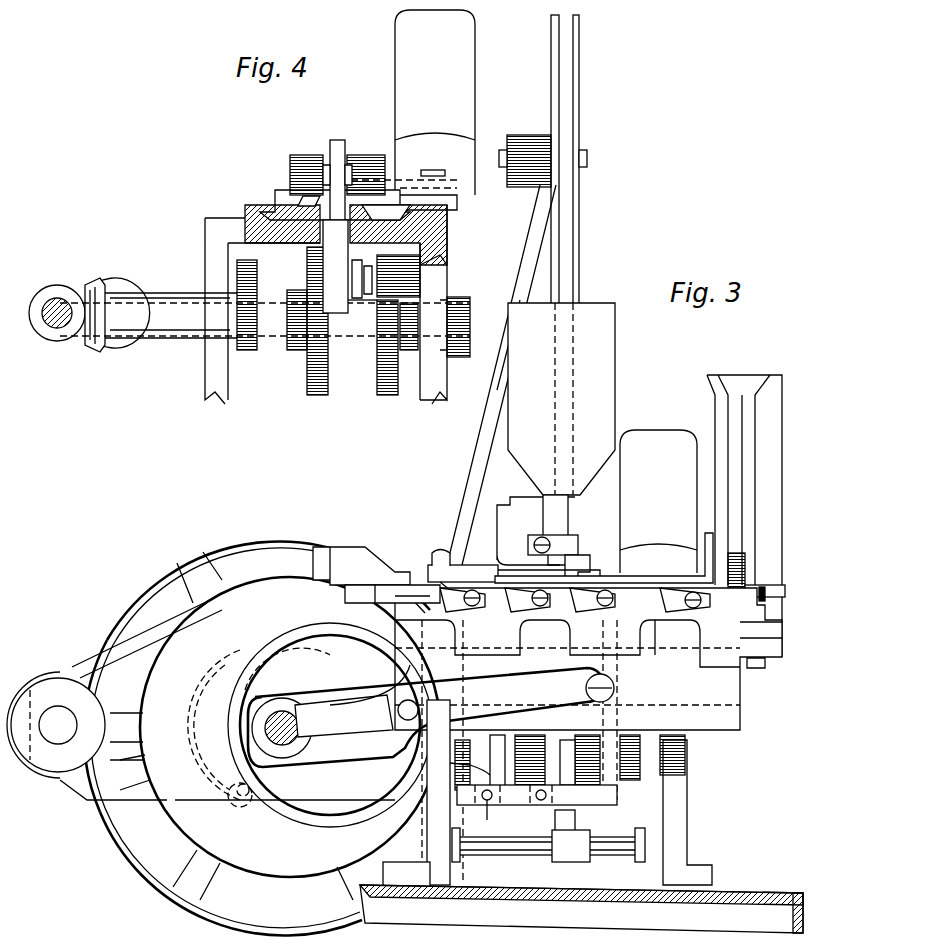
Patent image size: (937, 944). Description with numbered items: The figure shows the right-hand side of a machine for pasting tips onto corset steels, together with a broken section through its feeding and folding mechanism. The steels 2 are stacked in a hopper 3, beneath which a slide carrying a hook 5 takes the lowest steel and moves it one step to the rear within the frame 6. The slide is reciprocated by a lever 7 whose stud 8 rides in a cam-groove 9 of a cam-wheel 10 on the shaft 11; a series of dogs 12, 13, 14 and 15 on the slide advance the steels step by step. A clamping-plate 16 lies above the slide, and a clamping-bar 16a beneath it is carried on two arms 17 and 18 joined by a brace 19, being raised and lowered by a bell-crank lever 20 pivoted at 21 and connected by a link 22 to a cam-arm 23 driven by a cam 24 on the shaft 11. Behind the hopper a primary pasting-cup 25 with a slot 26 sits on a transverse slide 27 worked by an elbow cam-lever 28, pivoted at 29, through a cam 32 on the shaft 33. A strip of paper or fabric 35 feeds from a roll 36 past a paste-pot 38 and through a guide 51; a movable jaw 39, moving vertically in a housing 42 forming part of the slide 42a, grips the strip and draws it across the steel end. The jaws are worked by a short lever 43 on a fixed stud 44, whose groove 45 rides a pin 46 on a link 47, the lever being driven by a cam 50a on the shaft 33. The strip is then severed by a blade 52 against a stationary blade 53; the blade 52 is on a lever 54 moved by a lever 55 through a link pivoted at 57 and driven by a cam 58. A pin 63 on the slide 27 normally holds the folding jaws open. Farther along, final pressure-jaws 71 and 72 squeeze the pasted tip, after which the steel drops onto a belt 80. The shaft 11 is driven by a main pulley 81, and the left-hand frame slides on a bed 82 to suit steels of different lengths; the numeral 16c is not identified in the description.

In FIG. 3, the steel 2 is at (735, 553).
In FIG. 3, the hopper 3 is at (744, 468).
In FIG. 3, the hook 5 is at (766, 590).
In FIG. 4, the frame 6 is at (326, 304).
In FIG. 3, the frame 6 is at (740, 715).
In FIG. 3, the lever 7 is at (431, 716).
In FIG. 3, the stud 8 is at (398, 712).
In FIG. 3, the cam-groove 9 is at (322, 808).
In FIG. 3, the cam-wheel 10 is at (290, 727).
In FIG. 4, the shaft 11 is at (57, 300).
In FIG. 3, the shaft 11 is at (295, 722).
In FIG. 3, the dog 12 is at (685, 600).
In FIG. 3, the dog 13 is at (592, 600).
In FIG. 3, the dog 14 is at (527, 600).
In FIG. 3, the dog 15 is at (462, 600).
In FIG. 3, the clamping-plate 16 is at (650, 580).
In FIG. 3, the clamping-bar 16a is at (660, 640).
In FIG. 3, the plate extension 16c is at (412, 593).
In FIG. 3, the arm 17 is at (600, 768).
In FIG. 3, the arm 18 is at (460, 777).
In FIG. 3, the brace 19 is at (537, 795).
In FIG. 3, the bell-crank lever 20 is at (483, 767).
In FIG. 3, the pivot 21 is at (485, 808).
In FIG. 3, the link 22 is at (415, 667).
In FIG. 3, the cam-arm 23 is at (215, 762).
In FIG. 3, the cam 24 is at (320, 747).
In FIG. 4, the primary pasting-cup 25 is at (435, 102).
In FIG. 3, the primary pasting-cup 25 is at (658, 501).
In FIG. 4, the slot 26 is at (433, 170).
In FIG. 3, the slot 26 is at (639, 601).
In FIG. 4, the slide 27 is at (312, 198).
In FIG. 3, the elbow cam-lever 28 is at (576, 820).
In FIG. 3, the pivot 29 is at (515, 856).
In FIG. 4, the cam 32 is at (316, 395).
In FIG. 3, the cam 32 is at (528, 762).
In FIG. 4, the shaft 33 is at (270, 310).
In FIG. 3, the shaft 33 is at (583, 733).
In FIG. 3, the strip of paper or fabric 35 is at (570, 507).
In FIG. 3, the roll 36 is at (567, 232).
In FIG. 3, the paste-pot 38 is at (561, 399).
In FIG. 4, the movable jaw 39 is at (338, 158).
In FIG. 4, the housing 42 is at (335, 266).
In FIG. 4, the slide 42a is at (283, 200).
In FIG. 3, the slide 42a is at (587, 626).
In FIG. 4, the lever 43 is at (365, 295).
In FIG. 4, the stud 44 is at (415, 283).
In FIG. 4, the groove 45 is at (370, 232).
In FIG. 4, the pin 46 is at (385, 270).
In FIG. 4, the link 47 is at (362, 262).
In FIG. 4, the cam 50a is at (388, 395).
In FIG. 3, the cam 50a is at (690, 780).
In FIG. 3, the guide 51 is at (538, 534).
In FIG. 3, the blade 52 is at (575, 556).
In FIG. 3, the stationary blade 53 is at (545, 565).
In FIG. 3, the lever 54 is at (514, 575).
In FIG. 3, the lever 55 is at (434, 558).
In FIG. 3, the pivot 57 is at (450, 586).
In FIG. 4, the cam 58 is at (257, 272).
In FIG. 4, the pin 63 is at (360, 160).
In FIG. 3, the final pressure-jaw 71 is at (380, 570).
In FIG. 3, the final pressure-jaw 72 is at (392, 594).
In FIG. 3, the belt 80 is at (268, 578).
In FIG. 3, the main pulley 81 is at (298, 528).
In FIG. 3, the bed 82 is at (705, 880).